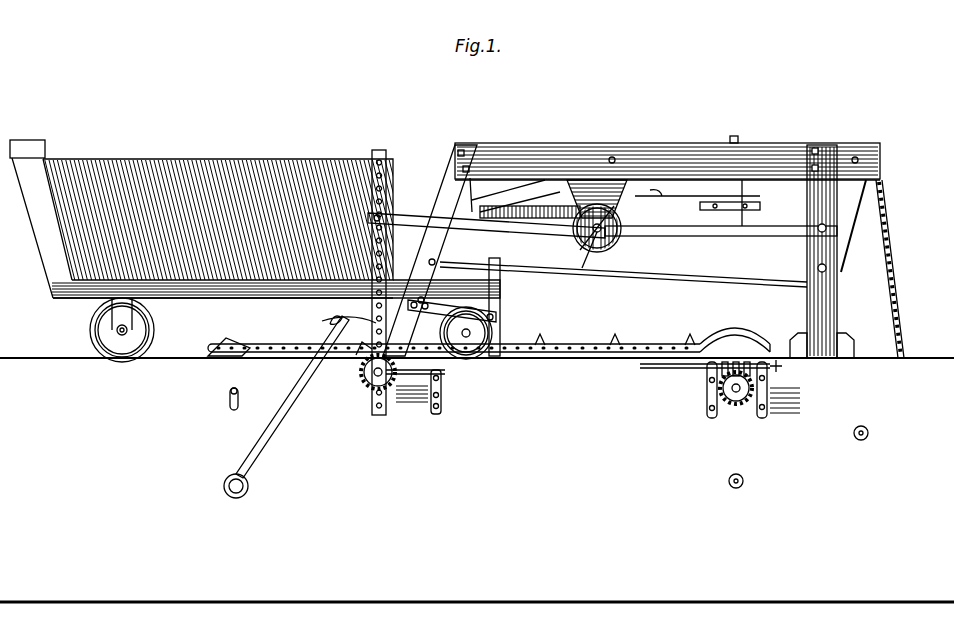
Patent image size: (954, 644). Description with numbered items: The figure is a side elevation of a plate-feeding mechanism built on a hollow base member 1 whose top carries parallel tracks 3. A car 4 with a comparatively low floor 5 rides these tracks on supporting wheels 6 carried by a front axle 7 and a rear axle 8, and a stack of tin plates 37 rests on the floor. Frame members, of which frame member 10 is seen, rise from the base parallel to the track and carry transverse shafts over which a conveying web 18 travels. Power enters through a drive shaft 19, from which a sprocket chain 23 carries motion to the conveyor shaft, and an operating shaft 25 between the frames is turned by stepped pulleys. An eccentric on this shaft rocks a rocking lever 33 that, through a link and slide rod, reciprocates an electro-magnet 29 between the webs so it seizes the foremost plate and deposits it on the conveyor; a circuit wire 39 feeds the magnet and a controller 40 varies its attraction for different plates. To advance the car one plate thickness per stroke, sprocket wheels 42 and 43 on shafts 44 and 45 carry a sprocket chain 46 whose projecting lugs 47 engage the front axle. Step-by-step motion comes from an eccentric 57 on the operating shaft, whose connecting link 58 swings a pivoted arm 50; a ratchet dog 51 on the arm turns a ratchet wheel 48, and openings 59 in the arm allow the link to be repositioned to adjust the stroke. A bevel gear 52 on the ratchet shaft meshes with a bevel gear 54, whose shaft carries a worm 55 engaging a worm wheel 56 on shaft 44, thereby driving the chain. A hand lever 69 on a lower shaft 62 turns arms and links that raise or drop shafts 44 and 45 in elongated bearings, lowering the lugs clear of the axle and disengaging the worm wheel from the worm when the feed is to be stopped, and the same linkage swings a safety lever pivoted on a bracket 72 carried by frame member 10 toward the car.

The base member 1 is at (745, 596).
The tracks 3 is at (152, 360).
The car 4 is at (40, 236).
The floor 5 is at (185, 292).
The supporting wheels 6 is at (96, 336).
The front axle 7 is at (468, 350).
The rear axle 8 is at (118, 330).
The frame member 10 is at (693, 148).
The conveying web 18 is at (757, 282).
The drive shaft 19 is at (859, 441).
The sprocket chain 23 is at (897, 295).
The operating shaft 25 is at (620, 246).
The magnet 29 is at (402, 218).
The rocking lever 33 is at (748, 209).
The tin plates 37 is at (200, 162).
The circuit wire 39 is at (770, 184).
The controller 40 is at (850, 350).
The sprocket wheel 42 is at (780, 369).
The sprocket wheel 43 is at (224, 341).
The shaft 44 is at (734, 406).
The shaft 45 is at (229, 392).
The sprocket chain 46 is at (724, 346).
The lugs 47 is at (688, 344).
The ratchet wheel 48 is at (368, 392).
The arm 50 is at (380, 153).
The ratchet dog 51 is at (366, 347).
The bevel gear 52 is at (364, 380).
The bevel gear 54 is at (390, 396).
The worm 55 is at (707, 390).
The worm wheel 56 is at (769, 388).
The eccentric 57 is at (594, 256).
The connecting link 58 is at (400, 214).
The openings 59 is at (330, 322).
The shaft 62 is at (231, 495).
The hand lever 69 is at (254, 442).
The bracket 72 is at (492, 311).